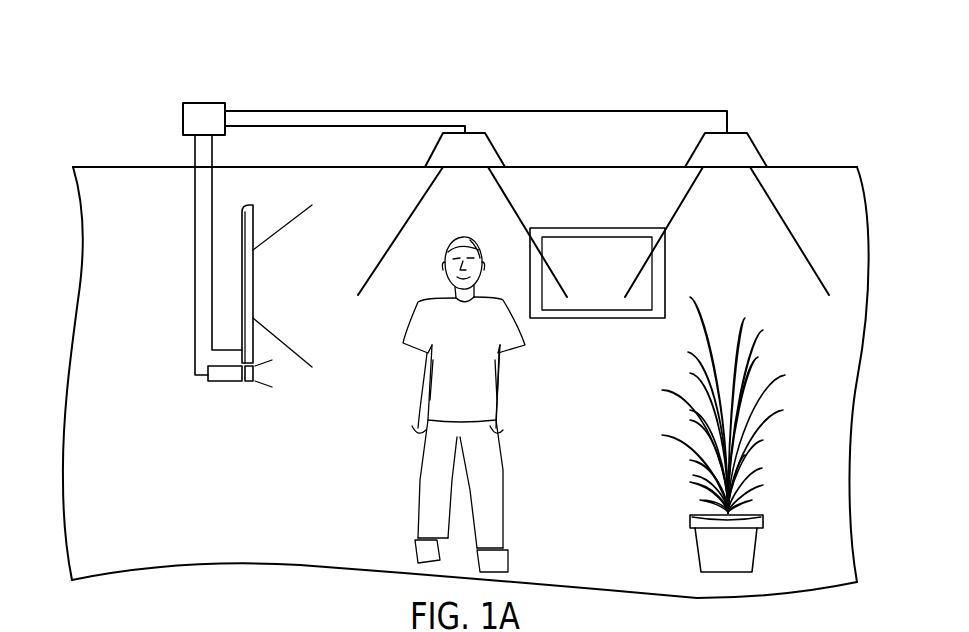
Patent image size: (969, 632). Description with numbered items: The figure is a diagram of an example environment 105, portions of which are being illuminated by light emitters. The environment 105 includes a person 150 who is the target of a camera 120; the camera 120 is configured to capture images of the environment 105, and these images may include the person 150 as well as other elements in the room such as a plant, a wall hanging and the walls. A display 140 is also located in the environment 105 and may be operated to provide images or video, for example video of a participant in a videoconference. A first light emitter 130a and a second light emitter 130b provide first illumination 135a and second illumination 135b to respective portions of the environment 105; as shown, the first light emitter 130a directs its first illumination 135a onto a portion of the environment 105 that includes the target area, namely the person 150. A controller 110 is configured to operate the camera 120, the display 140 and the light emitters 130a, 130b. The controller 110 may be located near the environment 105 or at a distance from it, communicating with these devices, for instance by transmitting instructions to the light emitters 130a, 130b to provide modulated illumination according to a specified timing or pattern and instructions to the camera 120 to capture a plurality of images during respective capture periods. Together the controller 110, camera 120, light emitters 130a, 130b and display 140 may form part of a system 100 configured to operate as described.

The system 100 is at (340, 104).
The environment 105 is at (272, 513).
The controller 110 is at (217, 128).
The camera 120 is at (226, 382).
The first light emitter 130a is at (498, 148).
The second light emitter 130b is at (760, 148).
The first illumination 135a is at (480, 200).
The second illumination 135b is at (743, 200).
The display 140 is at (253, 277).
The person 150 is at (522, 372).